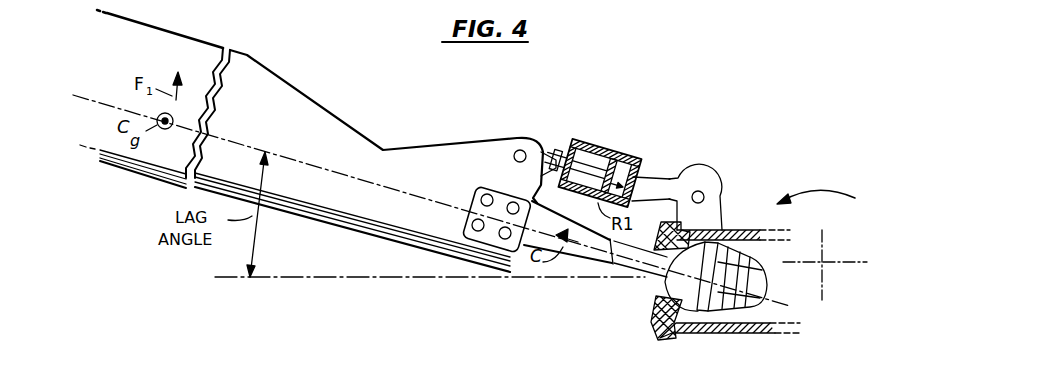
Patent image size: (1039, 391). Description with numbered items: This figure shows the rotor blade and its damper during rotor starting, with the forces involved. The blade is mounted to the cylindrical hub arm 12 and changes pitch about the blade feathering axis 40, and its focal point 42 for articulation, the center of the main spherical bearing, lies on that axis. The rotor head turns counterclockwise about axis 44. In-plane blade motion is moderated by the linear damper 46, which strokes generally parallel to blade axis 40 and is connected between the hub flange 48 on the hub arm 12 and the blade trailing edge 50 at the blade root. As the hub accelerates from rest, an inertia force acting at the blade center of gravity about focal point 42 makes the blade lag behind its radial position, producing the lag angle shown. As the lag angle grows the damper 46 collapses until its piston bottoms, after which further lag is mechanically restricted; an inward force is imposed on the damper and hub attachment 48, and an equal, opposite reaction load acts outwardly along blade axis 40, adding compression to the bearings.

The hub arm 12 is at (710, 333).
The blade feathering axis 40 is at (433, 202).
The focal point 42 is at (667, 292).
The axis of rotor head rotation 44 is at (826, 260).
The linear damper 46 is at (605, 147).
The hub flange 48 is at (705, 179).
The blade trailing edge 50 is at (495, 138).